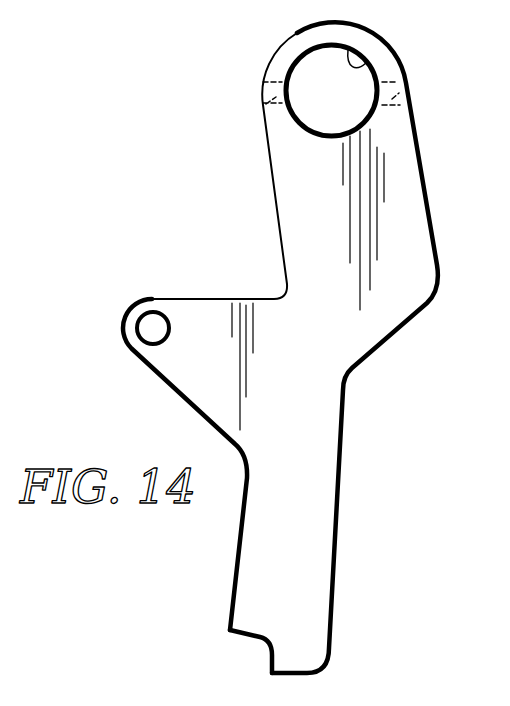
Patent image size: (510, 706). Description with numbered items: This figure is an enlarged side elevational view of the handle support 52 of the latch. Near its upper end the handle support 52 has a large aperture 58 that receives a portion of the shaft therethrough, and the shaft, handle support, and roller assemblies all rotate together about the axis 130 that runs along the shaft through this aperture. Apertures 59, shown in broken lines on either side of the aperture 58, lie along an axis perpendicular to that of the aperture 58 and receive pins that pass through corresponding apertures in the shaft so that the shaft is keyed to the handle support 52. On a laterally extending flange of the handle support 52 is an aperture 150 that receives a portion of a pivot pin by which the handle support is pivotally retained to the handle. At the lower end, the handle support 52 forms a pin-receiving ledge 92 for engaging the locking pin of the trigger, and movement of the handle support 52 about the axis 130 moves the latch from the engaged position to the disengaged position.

The handle support 52 is at (233, 545).
The aperture 58 is at (363, 66).
The apertures 59 is at (262, 85).
The pin-receiving ledge 92 is at (270, 658).
The axis 130 is at (332, 92).
The aperture 150 is at (142, 338).